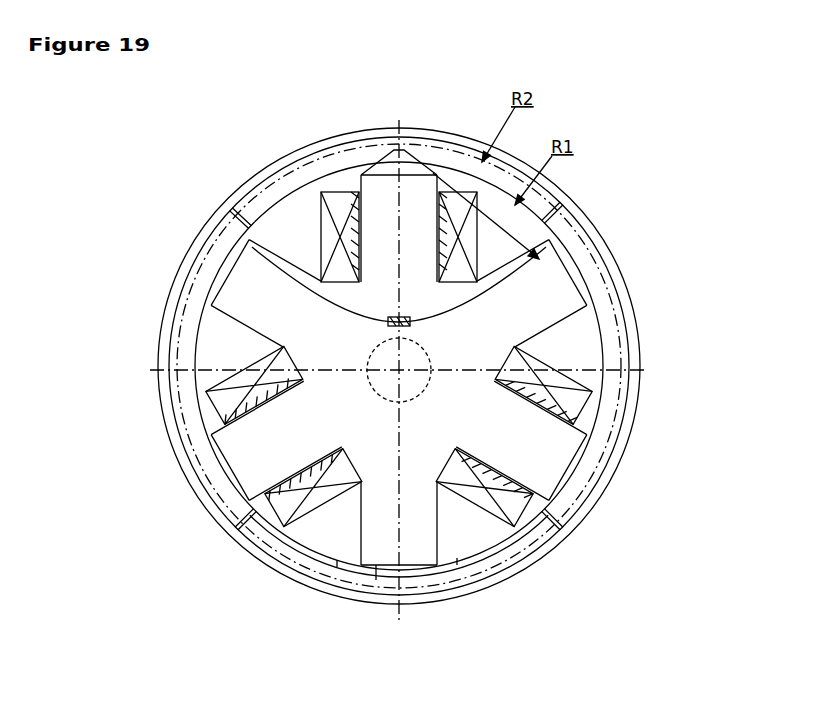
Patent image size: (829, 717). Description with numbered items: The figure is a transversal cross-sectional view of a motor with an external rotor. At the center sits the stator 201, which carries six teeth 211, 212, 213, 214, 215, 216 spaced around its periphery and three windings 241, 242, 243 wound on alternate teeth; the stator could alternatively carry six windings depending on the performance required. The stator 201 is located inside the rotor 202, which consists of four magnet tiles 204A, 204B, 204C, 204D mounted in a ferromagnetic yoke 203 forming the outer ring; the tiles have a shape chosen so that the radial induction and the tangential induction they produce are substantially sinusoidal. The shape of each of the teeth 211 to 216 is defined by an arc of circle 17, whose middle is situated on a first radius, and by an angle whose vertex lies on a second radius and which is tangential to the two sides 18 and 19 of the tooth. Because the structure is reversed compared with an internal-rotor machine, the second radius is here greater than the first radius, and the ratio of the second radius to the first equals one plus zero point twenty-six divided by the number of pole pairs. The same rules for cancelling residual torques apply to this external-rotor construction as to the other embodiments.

The arc of circle 17 is at (378, 568).
The side of the tooth 18 is at (337, 567).
The side of the tooth 19 is at (457, 563).
The stator 201 is at (518, 440).
The rotor 202 is at (640, 316).
The ferromagnetic yoke 203 is at (577, 213).
The magnet tile 204A is at (620, 353).
The magnet tile 204B is at (305, 575).
The magnet tile 204C is at (185, 428).
The magnet tile 204D is at (362, 158).
The tooth 211 is at (547, 283).
The tooth 212 is at (543, 463).
The tooth 213 is at (407, 533).
The tooth 214 is at (250, 448).
The tooth 215 is at (265, 337).
The tooth 216 is at (415, 202).
The winding 241 is at (567, 407).
The winding 242 is at (205, 392).
The winding 243 is at (320, 282).